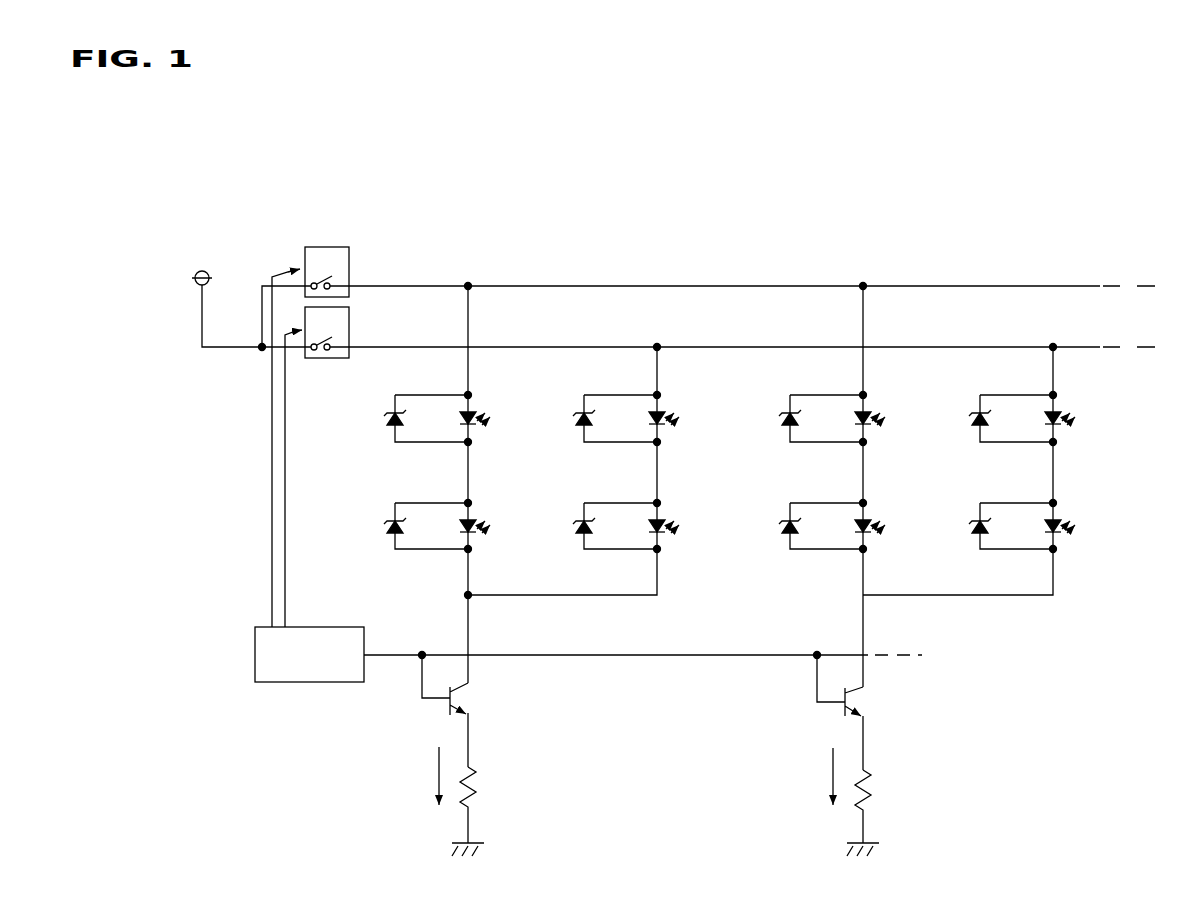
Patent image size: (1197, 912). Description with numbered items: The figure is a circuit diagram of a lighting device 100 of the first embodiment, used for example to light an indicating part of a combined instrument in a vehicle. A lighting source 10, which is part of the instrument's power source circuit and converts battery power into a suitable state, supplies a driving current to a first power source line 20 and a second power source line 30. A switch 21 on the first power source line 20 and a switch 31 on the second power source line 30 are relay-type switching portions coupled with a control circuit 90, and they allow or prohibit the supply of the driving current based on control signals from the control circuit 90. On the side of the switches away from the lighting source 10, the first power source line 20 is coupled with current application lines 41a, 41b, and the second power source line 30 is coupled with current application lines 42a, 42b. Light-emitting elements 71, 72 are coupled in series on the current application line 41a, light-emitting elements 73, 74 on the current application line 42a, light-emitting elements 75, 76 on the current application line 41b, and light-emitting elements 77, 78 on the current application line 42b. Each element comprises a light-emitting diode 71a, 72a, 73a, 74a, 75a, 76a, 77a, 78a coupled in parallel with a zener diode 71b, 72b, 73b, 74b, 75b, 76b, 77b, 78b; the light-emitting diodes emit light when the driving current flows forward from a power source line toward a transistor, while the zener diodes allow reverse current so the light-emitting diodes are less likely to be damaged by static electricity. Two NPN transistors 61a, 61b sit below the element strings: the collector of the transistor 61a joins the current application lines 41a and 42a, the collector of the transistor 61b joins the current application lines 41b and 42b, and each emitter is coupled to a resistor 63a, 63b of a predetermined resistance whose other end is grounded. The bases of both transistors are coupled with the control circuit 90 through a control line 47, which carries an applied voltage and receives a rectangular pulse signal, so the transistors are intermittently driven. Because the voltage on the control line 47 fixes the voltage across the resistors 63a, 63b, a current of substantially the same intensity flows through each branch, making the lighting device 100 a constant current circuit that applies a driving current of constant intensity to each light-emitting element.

The lighting device 100 is at (288, 200).
The lighting source 10 is at (202, 270).
The switch 21 is at (330, 246).
The switch 31 is at (349, 333).
The first power source line 20 is at (397, 286).
The second power source line 30 is at (418, 347).
The current application line 41a is at (470, 315).
The current application line 42a is at (660, 370).
The current application line 41b is at (865, 315).
The current application line 42b is at (1055, 370).
The light-emitting element 71 is at (477, 413).
The light-emitting diode 71a is at (474, 408).
The zener diode 71b is at (405, 424).
The light-emitting element 72 is at (477, 521).
The light-emitting diode 72a is at (474, 516).
The zener diode 72b is at (405, 532).
The light-emitting element 73 is at (666, 413).
The light-emitting diode 73a is at (663, 408).
The zener diode 73b is at (594, 424).
The light-emitting element 74 is at (666, 521).
The light-emitting diode 74a is at (663, 516).
The zener diode 74b is at (594, 532).
The light-emitting element 75 is at (872, 413).
The light-emitting diode 75a is at (869, 408).
The zener diode 75b is at (800, 424).
The light-emitting element 76 is at (872, 521).
The light-emitting diode 76a is at (869, 516).
The zener diode 76b is at (800, 532).
The light-emitting element 77 is at (1062, 413).
The light-emitting diode 77a is at (1059, 408).
The zener diode 77b is at (990, 424).
The light-emitting element 78 is at (1062, 521).
The light-emitting diode 78a is at (1059, 516).
The zener diode 78b is at (990, 532).
The transistor 61a is at (465, 688).
The transistor 61b is at (860, 688).
The resistor 63a is at (472, 785).
The resistor 63b is at (867, 785).
The control line 47 is at (376, 658).
The control circuit 90 is at (292, 684).